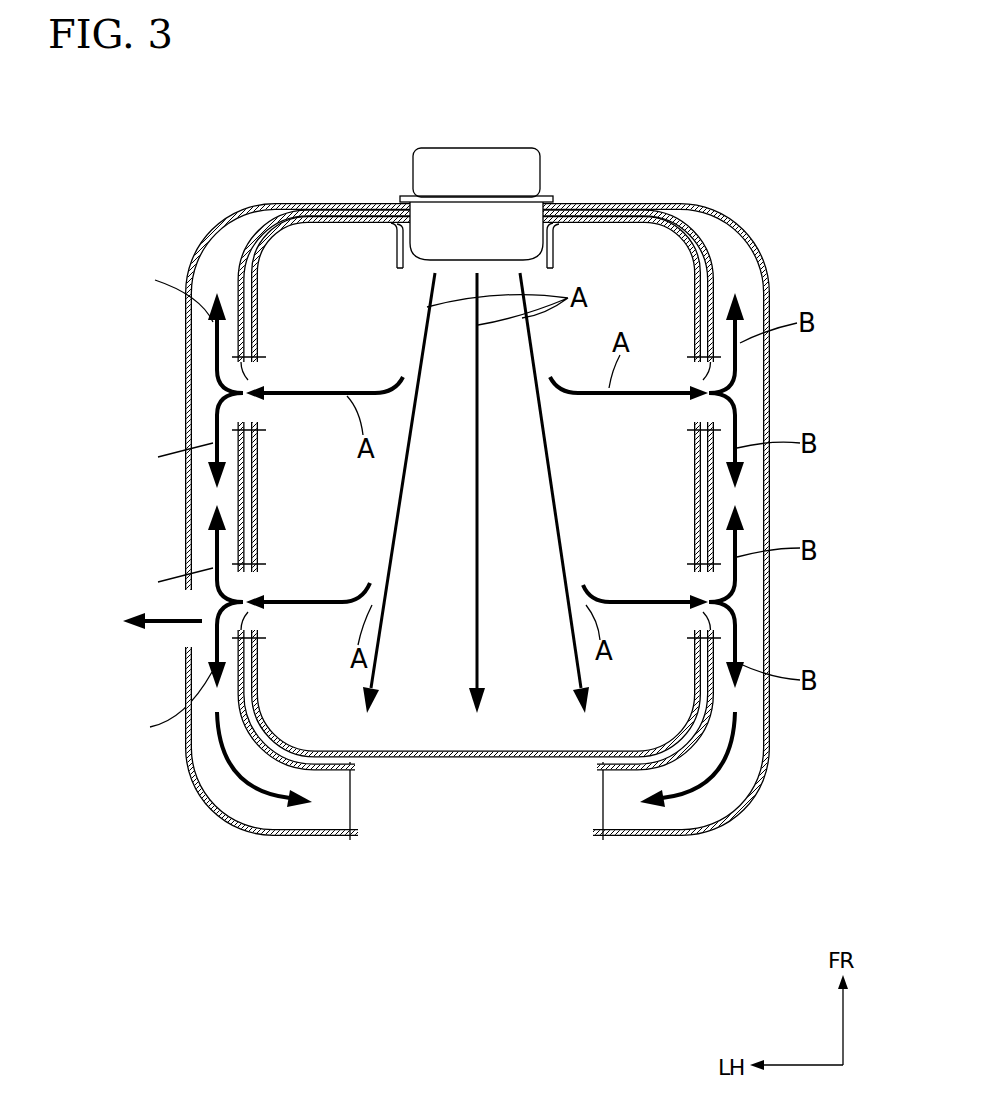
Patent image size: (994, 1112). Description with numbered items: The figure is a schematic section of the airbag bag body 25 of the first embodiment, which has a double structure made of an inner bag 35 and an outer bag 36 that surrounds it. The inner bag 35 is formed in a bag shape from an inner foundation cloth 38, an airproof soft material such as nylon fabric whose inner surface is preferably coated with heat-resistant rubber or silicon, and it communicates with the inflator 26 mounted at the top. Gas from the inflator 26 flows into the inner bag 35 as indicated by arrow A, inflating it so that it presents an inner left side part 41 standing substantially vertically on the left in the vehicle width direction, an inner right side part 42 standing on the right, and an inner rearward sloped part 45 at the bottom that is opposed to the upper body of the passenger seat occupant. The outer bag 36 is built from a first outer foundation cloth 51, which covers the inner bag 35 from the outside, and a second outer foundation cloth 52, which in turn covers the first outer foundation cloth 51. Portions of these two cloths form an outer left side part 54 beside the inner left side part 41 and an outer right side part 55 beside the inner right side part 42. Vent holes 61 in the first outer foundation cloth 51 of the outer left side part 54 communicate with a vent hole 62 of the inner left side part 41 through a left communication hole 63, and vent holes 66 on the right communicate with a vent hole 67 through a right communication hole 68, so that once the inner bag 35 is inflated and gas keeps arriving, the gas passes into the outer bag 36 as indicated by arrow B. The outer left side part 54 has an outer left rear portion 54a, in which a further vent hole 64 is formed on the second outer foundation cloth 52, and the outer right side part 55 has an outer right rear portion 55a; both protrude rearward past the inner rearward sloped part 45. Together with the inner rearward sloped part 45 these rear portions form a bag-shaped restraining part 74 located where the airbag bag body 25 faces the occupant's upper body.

The airbag bag body 25 is at (60, 310).
The inflator 26 is at (474, 163).
The inner bag 35 is at (240, 497).
The outer bag 36 is at (172, 334).
The inner foundation cloth 38 is at (340, 225).
The inner left side part 41 is at (260, 508).
The inner right side part 42 is at (693, 490).
The inner rearward sloped part 45 is at (450, 760).
The first outer foundation cloth 51 is at (713, 277).
The second outer foundation cloth 52 is at (720, 207).
The outer left side part 54 is at (185, 542).
The outer left rear portion 54a is at (316, 838).
The outer right side part 55 is at (770, 502).
The outer right rear portion 55a is at (648, 838).
The vent holes 61 is at (240, 380).
The vent hole 62 is at (255, 370).
The left communication hole 63 is at (240, 385).
The vent hole 64 is at (184, 648).
The vent holes 66 is at (703, 388).
The vent hole 67 is at (652, 393).
The right communication hole 68 is at (722, 393).
The restraining part 74 is at (503, 839).